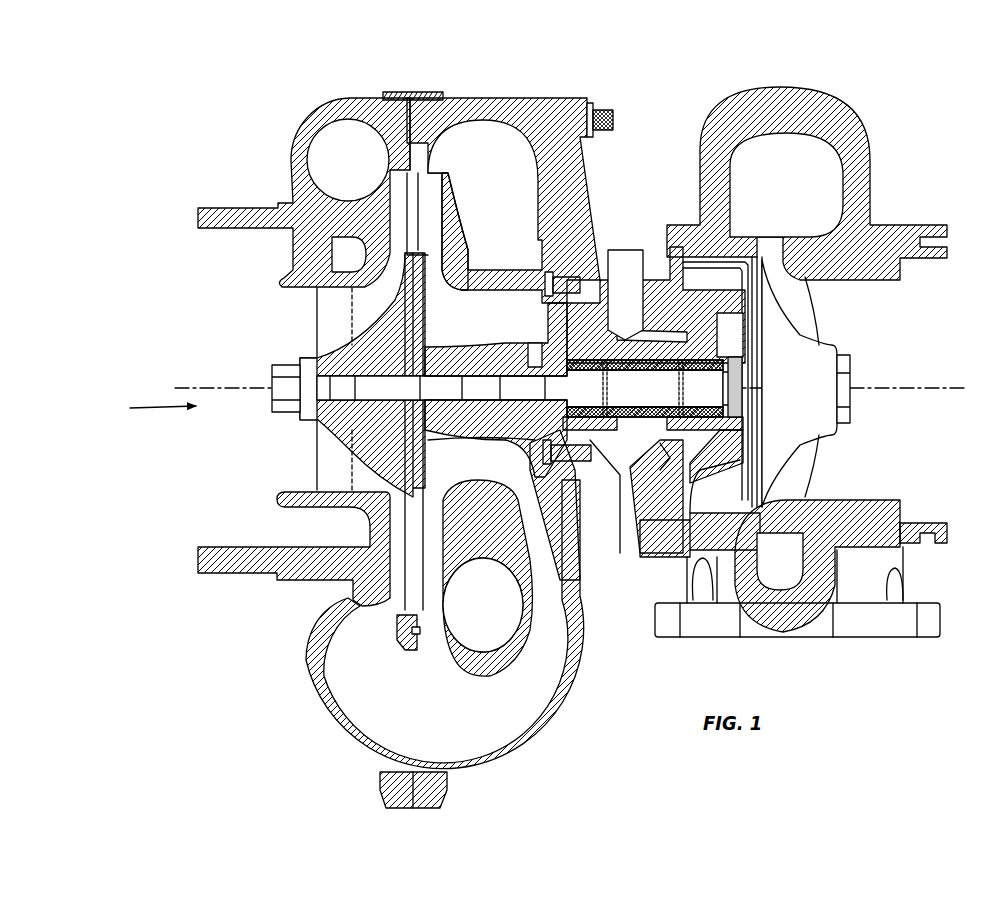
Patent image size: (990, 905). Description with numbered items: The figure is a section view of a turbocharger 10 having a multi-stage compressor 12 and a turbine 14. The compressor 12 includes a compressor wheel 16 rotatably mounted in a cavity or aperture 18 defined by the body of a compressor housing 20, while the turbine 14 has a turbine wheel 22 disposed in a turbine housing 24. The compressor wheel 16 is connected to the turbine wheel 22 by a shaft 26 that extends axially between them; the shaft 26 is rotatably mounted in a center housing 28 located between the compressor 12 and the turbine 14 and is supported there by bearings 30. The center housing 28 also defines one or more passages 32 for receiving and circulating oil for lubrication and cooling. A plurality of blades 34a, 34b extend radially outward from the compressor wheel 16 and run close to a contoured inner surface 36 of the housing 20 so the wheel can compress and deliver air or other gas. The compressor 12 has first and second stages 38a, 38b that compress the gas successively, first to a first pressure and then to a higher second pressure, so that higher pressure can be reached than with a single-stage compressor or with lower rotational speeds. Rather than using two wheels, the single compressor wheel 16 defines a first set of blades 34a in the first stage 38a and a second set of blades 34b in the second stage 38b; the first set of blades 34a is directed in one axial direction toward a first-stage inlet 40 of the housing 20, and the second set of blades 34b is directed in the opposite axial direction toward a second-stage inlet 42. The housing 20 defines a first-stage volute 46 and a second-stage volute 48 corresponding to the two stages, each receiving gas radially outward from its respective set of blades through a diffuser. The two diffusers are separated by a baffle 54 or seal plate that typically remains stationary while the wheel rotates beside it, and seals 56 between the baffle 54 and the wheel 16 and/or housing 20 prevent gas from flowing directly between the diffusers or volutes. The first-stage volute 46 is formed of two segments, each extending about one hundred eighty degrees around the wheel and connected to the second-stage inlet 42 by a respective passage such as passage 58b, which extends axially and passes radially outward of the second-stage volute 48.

The turbocharger 10 is at (652, 74).
The multi-stage compressor 12 is at (320, 338).
The turbine 14 is at (817, 172).
The compressor wheel 16 is at (340, 343).
The cavity or aperture 18 is at (292, 505).
The compressor housing 20 is at (287, 204).
The turbine wheel 22 is at (825, 355).
The turbine housing 24 is at (898, 232).
The shaft 26 is at (700, 398).
The center housing 28 is at (640, 285).
The bearings 30 is at (660, 445).
The passages 32 is at (625, 306).
The first set of blades 34a is at (322, 466).
The second set of blades 34b is at (322, 442).
The contoured inner surface 36 is at (466, 285).
The first stage 38a is at (342, 90).
The second stage 38b is at (474, 88).
The first-stage inlet 40 is at (146, 406).
The second-stage inlet 42 is at (516, 306).
The first-stage volute 46 is at (340, 156).
The second-stage volute 48 is at (467, 150).
The baffle 54 is at (472, 678).
The seals 56 is at (318, 417).
The passage 58b is at (470, 735).